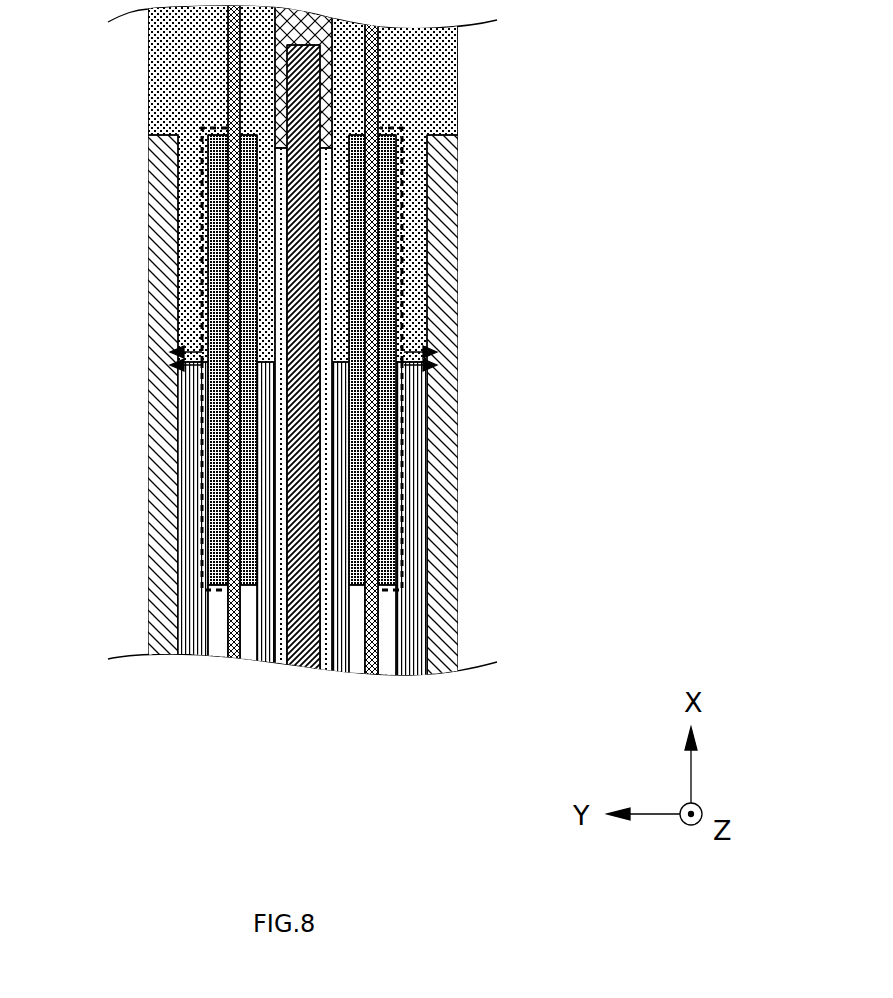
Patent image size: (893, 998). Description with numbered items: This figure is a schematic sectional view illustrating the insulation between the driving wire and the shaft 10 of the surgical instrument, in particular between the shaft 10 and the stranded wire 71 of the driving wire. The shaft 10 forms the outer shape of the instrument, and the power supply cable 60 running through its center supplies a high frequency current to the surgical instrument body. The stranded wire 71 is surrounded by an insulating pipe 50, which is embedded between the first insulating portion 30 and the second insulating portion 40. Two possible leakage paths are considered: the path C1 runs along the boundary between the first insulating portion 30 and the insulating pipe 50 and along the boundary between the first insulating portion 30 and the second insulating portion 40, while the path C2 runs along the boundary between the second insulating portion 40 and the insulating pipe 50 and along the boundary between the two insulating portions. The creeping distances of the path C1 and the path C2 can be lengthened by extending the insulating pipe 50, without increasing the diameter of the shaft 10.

The shaft 10 is at (458, 535).
The first insulating portion 30 is at (148, 77).
The second insulating portion 40 is at (178, 620).
The insulating pipe 50 is at (210, 172).
The power supply cable 60 is at (293, 665).
The stranded wire 71 is at (229, 660).
The path C1 is at (200, 246).
The path C2 is at (200, 450).